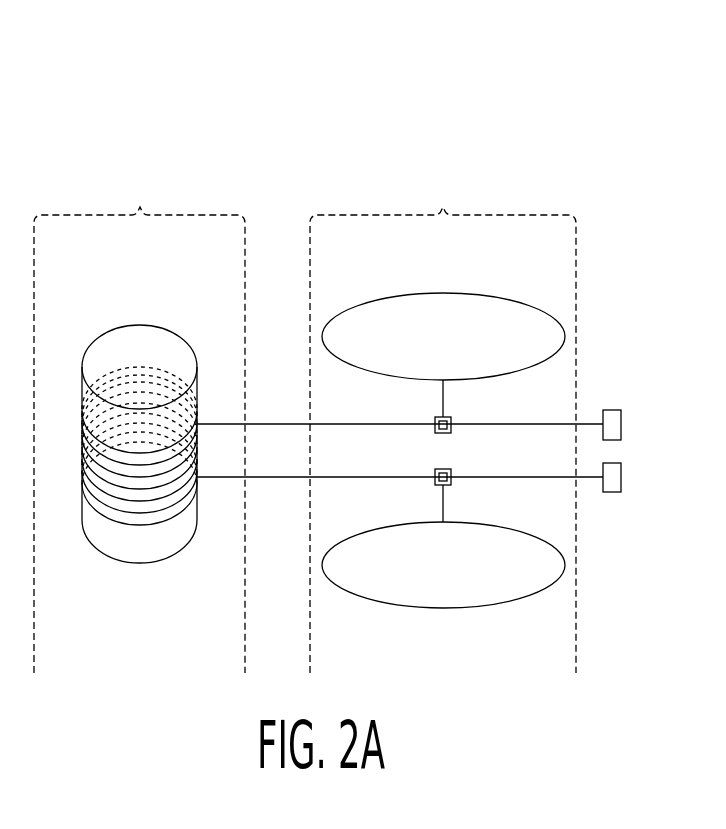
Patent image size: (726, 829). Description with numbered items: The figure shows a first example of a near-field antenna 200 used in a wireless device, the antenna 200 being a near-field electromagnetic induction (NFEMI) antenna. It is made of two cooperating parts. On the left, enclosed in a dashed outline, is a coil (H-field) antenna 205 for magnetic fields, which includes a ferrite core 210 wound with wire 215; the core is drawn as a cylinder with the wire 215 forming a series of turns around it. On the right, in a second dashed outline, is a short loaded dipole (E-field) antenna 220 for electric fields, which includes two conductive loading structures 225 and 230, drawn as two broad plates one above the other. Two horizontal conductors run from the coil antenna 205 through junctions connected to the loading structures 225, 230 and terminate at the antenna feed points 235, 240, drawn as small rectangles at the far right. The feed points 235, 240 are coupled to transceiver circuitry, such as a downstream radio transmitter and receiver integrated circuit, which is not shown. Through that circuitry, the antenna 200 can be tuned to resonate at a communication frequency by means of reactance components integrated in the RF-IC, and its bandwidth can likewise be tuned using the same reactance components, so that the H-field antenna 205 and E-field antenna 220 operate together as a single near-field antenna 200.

The near-field antenna 200 is at (156, 101).
The coil (H-field) antenna 205 is at (139, 421).
The ferrite core 210 is at (155, 325).
The wire 215 is at (117, 525).
The short loaded dipole (E-field) antenna 220 is at (443, 421).
The conductive loading structure 225 is at (518, 302).
The conductive loading structure 230 is at (503, 605).
The feed point 235 is at (612, 410).
The feed point 240 is at (612, 492).